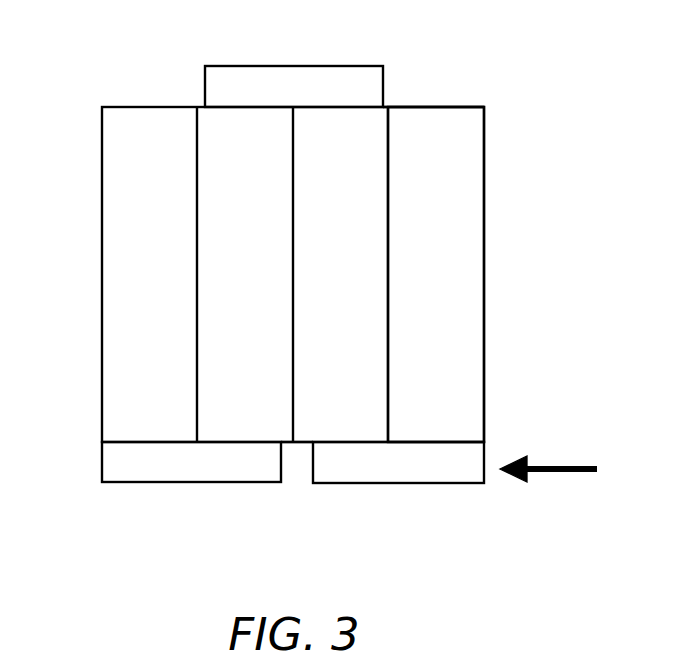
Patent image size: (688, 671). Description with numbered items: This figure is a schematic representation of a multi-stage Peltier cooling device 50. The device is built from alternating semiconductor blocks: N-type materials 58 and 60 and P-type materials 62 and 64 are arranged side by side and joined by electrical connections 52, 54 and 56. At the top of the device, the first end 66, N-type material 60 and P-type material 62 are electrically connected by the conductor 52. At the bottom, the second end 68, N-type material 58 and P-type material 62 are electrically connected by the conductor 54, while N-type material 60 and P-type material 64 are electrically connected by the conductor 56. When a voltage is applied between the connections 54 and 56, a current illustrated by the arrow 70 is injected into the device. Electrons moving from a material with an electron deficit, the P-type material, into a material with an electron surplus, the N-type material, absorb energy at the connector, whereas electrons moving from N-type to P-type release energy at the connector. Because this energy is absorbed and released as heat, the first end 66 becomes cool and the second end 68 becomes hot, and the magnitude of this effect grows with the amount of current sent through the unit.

The multi-stage Peltier cooling device 50 is at (504, 92).
The electrical connection 52 is at (278, 82).
The electrical connection 54 is at (160, 470).
The electrical connection 56 is at (400, 472).
The N-type material 58 is at (112, 235).
The N-type material 60 is at (373, 197).
The P-type material 62 is at (213, 353).
The P-type material 64 is at (465, 350).
The first end 66 is at (410, 80).
The second end 68 is at (283, 510).
The arrow 70 is at (560, 475).